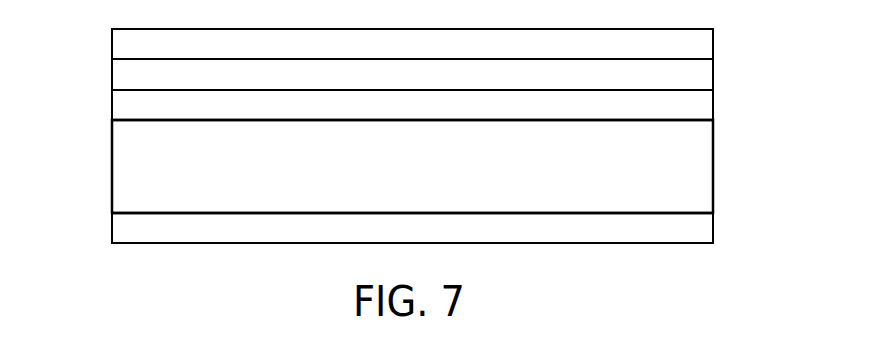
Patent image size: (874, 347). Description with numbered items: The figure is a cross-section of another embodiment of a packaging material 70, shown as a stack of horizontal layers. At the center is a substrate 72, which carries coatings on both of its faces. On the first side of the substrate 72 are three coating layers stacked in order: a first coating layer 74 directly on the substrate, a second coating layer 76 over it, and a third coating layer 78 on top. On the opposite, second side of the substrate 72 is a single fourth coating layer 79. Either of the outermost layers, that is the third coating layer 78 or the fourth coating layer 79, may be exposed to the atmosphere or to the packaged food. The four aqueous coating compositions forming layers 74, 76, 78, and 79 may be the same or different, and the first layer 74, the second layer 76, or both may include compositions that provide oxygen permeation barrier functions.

The packaging material 70 is at (740, 163).
The substrate 72 is at (110, 190).
The first coating layer 74 is at (110, 103).
The second coating layer 76 is at (110, 73).
The third coating layer 78 is at (110, 45).
The fourth coating layer 79 is at (110, 227).